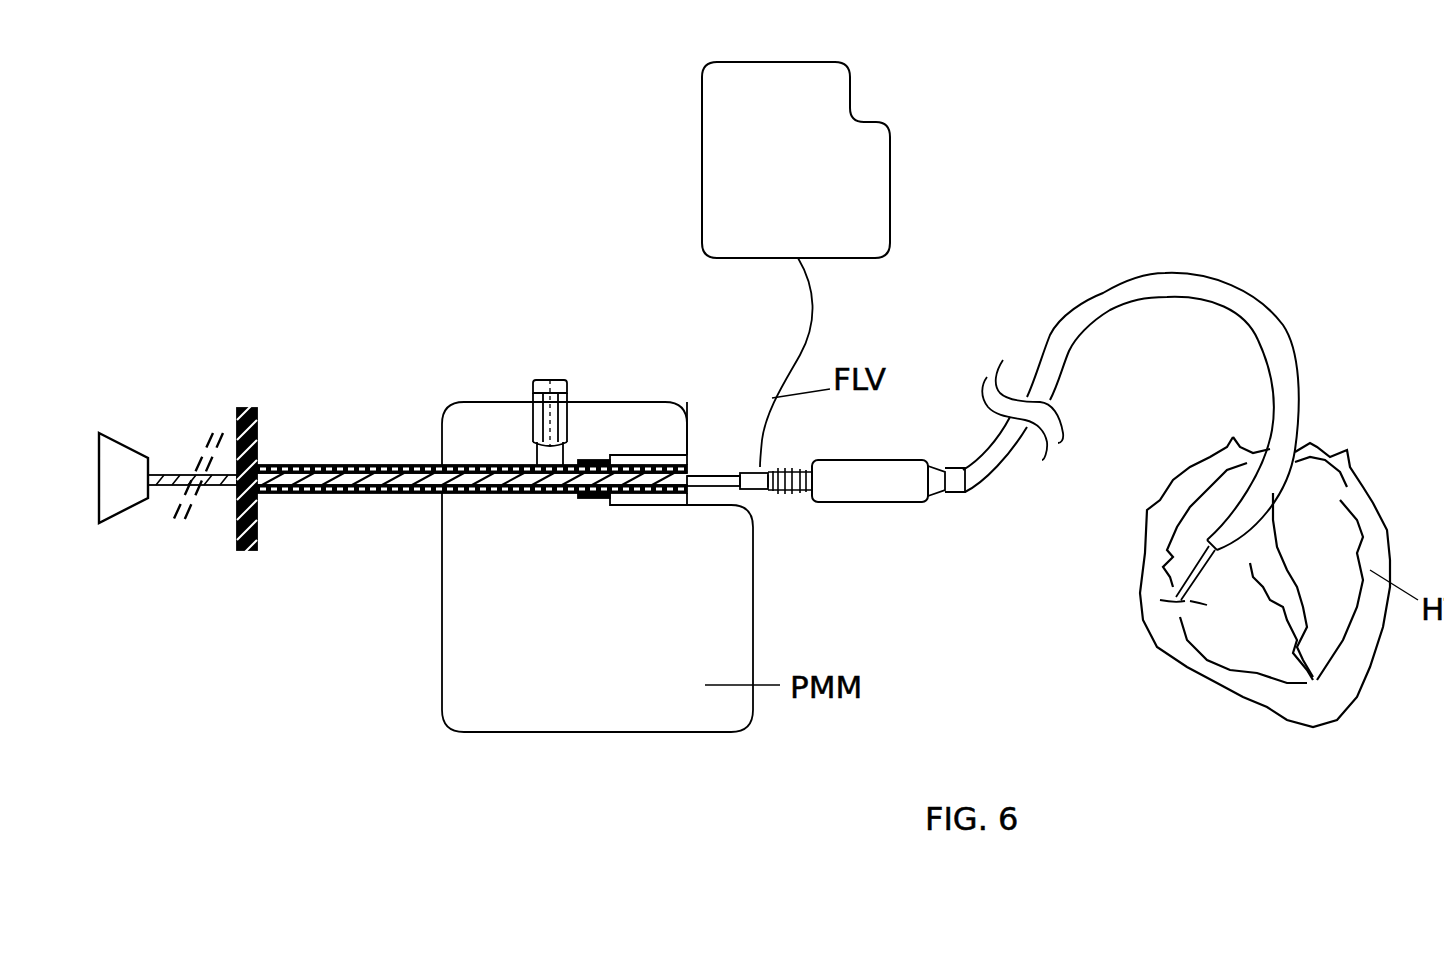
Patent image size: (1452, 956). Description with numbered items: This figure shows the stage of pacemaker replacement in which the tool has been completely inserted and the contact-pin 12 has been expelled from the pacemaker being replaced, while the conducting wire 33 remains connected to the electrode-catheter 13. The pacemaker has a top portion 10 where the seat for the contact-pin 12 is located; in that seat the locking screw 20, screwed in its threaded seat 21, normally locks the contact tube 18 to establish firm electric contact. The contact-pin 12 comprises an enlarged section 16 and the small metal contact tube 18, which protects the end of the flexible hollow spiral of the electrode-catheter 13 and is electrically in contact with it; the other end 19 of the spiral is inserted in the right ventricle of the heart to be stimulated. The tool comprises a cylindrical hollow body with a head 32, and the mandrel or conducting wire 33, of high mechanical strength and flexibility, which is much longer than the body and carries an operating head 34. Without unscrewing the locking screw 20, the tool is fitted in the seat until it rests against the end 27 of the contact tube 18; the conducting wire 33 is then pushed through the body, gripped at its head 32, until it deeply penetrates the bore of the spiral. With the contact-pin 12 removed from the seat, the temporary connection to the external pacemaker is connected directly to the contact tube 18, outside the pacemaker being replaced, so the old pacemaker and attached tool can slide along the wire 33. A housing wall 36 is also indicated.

The top portion 10 is at (482, 427).
The contact-pin 12 is at (860, 458).
The electrode-catheter 13 is at (1125, 293).
The enlarged section 16 is at (877, 485).
The contact tube 18 is at (760, 488).
The other end of spiral 19 is at (1180, 573).
The locking screw 20 is at (553, 380).
The threaded seat 21 is at (569, 438).
The end of contact tube 27 is at (739, 464).
The head 32 is at (248, 405).
The conducting wire 33 is at (713, 474).
The operating head 34 is at (118, 455).
The housing wall 36 is at (689, 462).